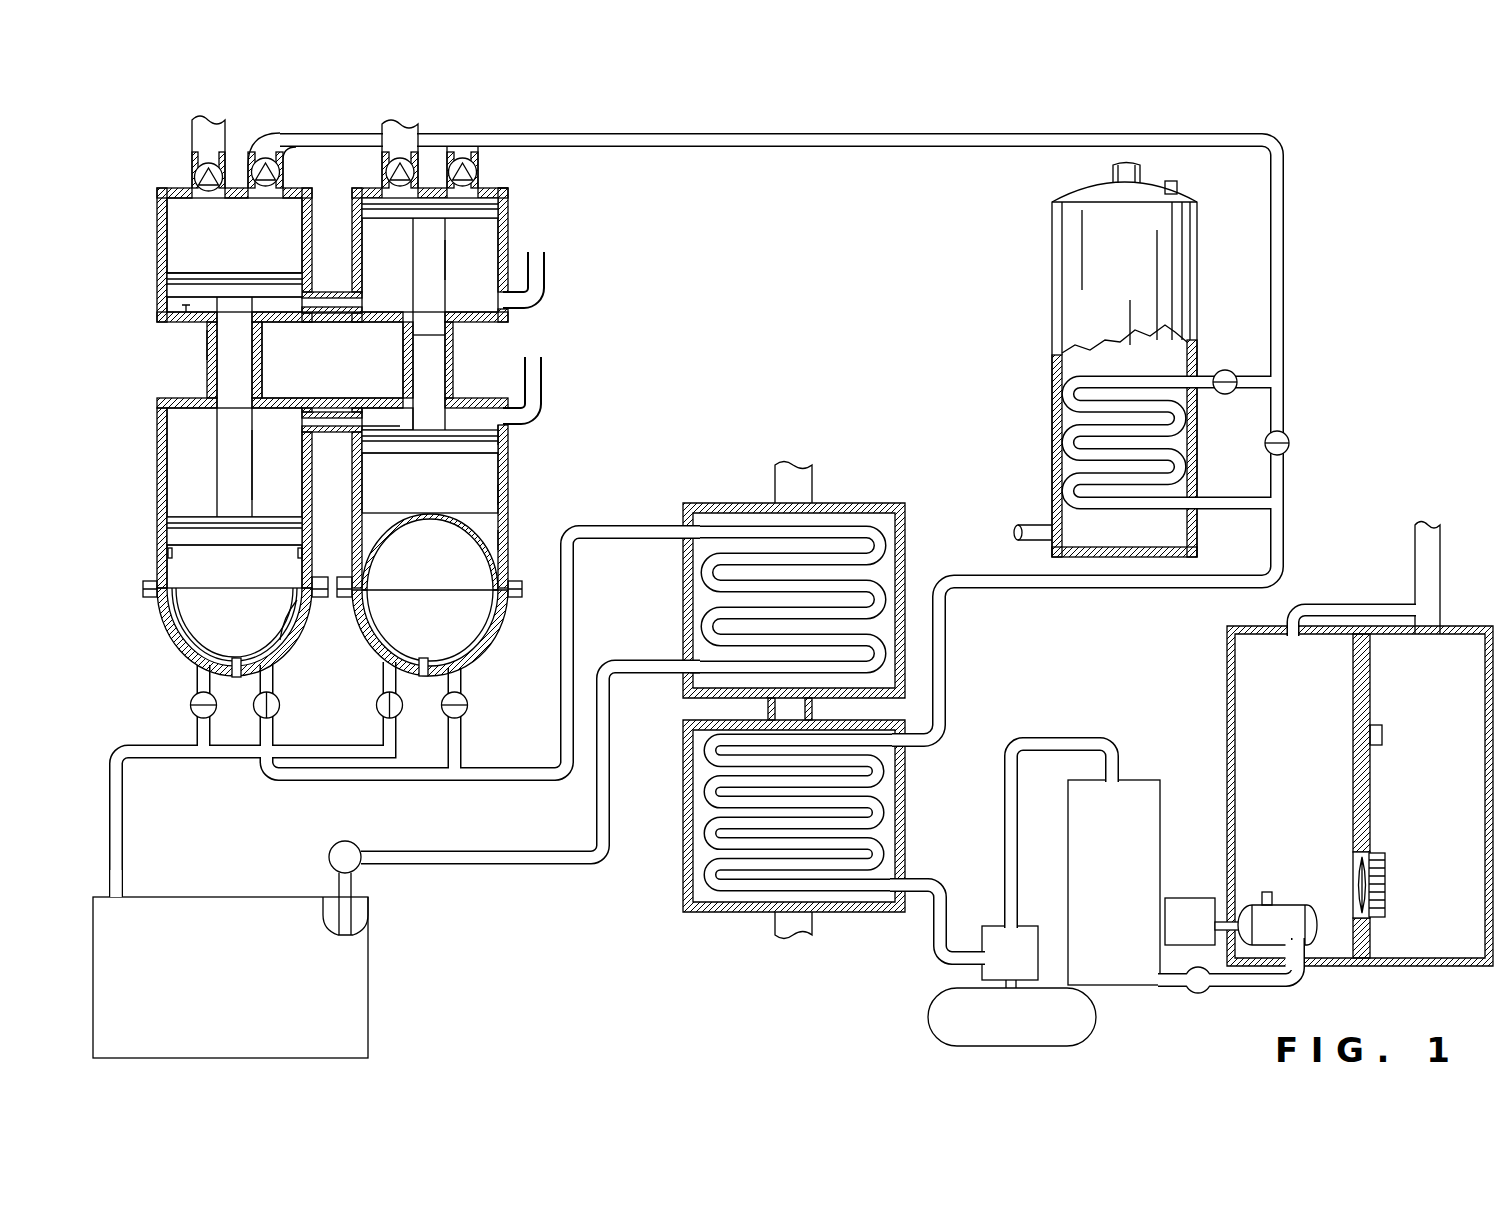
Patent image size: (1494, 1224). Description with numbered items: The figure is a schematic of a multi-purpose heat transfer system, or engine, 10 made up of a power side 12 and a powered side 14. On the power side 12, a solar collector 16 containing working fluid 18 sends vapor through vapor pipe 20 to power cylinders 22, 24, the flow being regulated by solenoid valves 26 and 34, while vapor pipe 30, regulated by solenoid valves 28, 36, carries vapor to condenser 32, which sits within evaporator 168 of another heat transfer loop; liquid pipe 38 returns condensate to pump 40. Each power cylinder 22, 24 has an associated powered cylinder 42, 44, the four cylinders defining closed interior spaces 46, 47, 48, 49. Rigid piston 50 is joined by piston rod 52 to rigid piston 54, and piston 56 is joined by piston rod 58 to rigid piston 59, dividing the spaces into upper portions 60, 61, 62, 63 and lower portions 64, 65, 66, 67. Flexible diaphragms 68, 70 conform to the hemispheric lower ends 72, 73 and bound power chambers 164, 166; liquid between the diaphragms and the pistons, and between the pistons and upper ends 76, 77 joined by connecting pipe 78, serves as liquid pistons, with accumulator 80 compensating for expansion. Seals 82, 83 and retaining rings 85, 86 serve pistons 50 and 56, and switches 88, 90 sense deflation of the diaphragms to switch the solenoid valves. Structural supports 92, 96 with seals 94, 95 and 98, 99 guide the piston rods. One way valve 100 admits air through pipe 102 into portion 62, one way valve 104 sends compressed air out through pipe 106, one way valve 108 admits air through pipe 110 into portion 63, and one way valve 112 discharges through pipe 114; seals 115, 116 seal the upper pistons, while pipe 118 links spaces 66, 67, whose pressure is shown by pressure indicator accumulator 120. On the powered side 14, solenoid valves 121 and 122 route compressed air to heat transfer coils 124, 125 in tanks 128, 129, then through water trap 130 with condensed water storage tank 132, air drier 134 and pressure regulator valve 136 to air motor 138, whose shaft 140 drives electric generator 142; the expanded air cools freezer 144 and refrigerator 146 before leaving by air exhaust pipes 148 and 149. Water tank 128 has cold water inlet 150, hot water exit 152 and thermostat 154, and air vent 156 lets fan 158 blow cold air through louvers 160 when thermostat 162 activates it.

The multi-purpose heat transfer system 10 is at (138, 470).
The power side 12 is at (150, 672).
The powered side 14 is at (130, 245).
The solar collector 16 is at (110, 897).
The working fluid 18 is at (215, 897).
The vapor pipe 20 is at (128, 745).
The power cylinder 22 is at (217, 502).
The power cylinder 24 is at (448, 501).
The solenoid valve 26 is at (190, 705).
The solenoid valve 28 is at (280, 705).
The vapor pipe 30 is at (480, 780).
The condenser 32 is at (880, 538).
The solenoid valve 34 is at (377, 705).
The solenoid valve 36 is at (468, 712).
The liquid pipe 38 is at (488, 851).
The pump 40 is at (329, 857).
The powered cylinder 42 is at (195, 271).
The powered cylinder 44 is at (461, 248).
The closed interior space 46 is at (178, 517).
The closed interior space 47 is at (498, 492).
The closed interior space 48 is at (170, 226).
The closed interior space 49 is at (447, 262).
The rigid piston 50 is at (252, 500).
The piston rod 52 is at (232, 372).
The rigid piston 54 is at (190, 273).
The piston 56 is at (430, 453).
The piston rod 58 is at (453, 340).
The rigid piston 59 is at (457, 218).
The upper portion 60 is at (207, 469).
The upper portion 61 is at (396, 427).
The upper portion 62 is at (254, 241).
The upper portion 63 is at (508, 192).
The lower portion 64 is at (244, 580).
The lower portion 65 is at (424, 495).
The space 66 is at (185, 312).
The space 67 is at (401, 269).
The flexible diaphragm 68 is at (195, 632).
The flexible diaphragm 70 is at (405, 527).
The lower end 72 is at (228, 632).
The lower end 73 is at (446, 633).
The upper end 76 is at (157, 398).
The upper end 77 is at (385, 408).
The connecting pipe 78 is at (330, 412).
The pressurized liquid volume regulator 80 is at (545, 375).
The seal 82 is at (167, 525).
The seal 83 is at (508, 437).
The retaining ring 85 is at (170, 552).
The retaining ring 86 is at (498, 540).
The switch 88 is at (236, 658).
The switch 90 is at (424, 658).
The structural support 92 is at (262, 355).
The seal 94 is at (262, 380).
The seal 95 is at (217, 335).
The structural support 96 is at (408, 360).
The seal 98 is at (453, 378).
The seal 99 is at (413, 340).
The one way valve 100 is at (195, 178).
The pipe 102 is at (192, 135).
The one way valve 104 is at (283, 170).
The compressed air pipe 106 is at (605, 150).
The one way valve 108 is at (382, 175).
The pipe 110 is at (382, 125).
The one way valve 112 is at (465, 150).
The pipe 114 is at (478, 172).
The seal 115 is at (167, 284).
The seal 116 is at (498, 208).
The pipe 118 is at (330, 313).
The pressure indicator accumulator 120 is at (545, 262).
The solenoid valve 121 is at (1225, 370).
The solenoid valve 122 is at (1289, 443).
The heat transfer coil 124 is at (1110, 375).
The heat transfer coil 125 is at (878, 823).
The water tank 128 is at (1132, 355).
The tank 129 is at (905, 783).
The water trap 130 is at (1028, 965).
The condensed water storage tank 132 is at (1094, 1015).
The air drier 134 is at (1140, 780).
The pressure regulator valve 136 is at (1203, 990).
The air motor 138 is at (1290, 905).
The air motor shaft 140 is at (1235, 922).
The electric generator 142 is at (1195, 898).
The freezer 144 is at (1227, 650).
The refrigerator 146 is at (1490, 660).
The air exhaust pipe 148 is at (1440, 610).
The air exhaust pipe 149 is at (1415, 553).
The cold water inlet 150 is at (1030, 525).
The hot water exit 152 is at (1113, 173).
The thermostat 154 is at (1175, 181).
The air vent 156 is at (1362, 852).
The fan 158 is at (1358, 870).
The louvers 160 is at (1386, 903).
The thermostat 162 is at (1382, 735).
The power chamber 164 is at (285, 648).
The power chamber 166 is at (443, 615).
The evaporator 168 is at (855, 503).